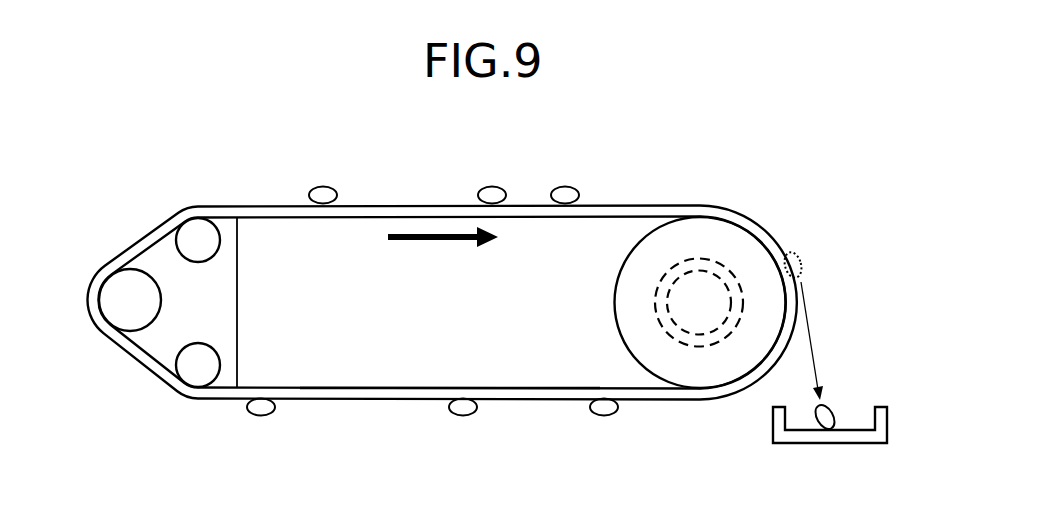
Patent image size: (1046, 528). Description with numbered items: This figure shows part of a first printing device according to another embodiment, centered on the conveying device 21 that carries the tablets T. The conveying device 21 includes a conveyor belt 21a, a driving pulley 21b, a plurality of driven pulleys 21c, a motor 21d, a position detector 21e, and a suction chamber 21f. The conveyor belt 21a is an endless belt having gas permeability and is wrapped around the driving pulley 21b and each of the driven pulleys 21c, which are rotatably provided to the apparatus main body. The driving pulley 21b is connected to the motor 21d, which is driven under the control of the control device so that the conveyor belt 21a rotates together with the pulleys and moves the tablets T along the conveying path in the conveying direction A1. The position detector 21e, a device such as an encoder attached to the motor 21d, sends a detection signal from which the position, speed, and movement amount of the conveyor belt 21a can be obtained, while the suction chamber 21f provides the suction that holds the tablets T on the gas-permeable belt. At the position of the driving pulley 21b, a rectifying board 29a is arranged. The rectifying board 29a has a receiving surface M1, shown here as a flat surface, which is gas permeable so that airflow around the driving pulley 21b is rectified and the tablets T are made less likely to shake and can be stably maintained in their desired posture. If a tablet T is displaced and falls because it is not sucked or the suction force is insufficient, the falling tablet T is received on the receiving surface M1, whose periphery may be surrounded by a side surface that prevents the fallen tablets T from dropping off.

The conveying device 21 is at (708, 154).
The conveyor belt 21a is at (635, 204).
The driving pulley 21b is at (733, 238).
The driven pulleys 21c is at (110, 287).
The motor 21d is at (782, 245).
The position detector 21e is at (786, 268).
The suction chamber 21f is at (558, 375).
The tablets T is at (565, 190).
The conveying direction A1 is at (442, 240).
The receiving surface M1 is at (848, 428).
The rectifying board 29a is at (880, 412).